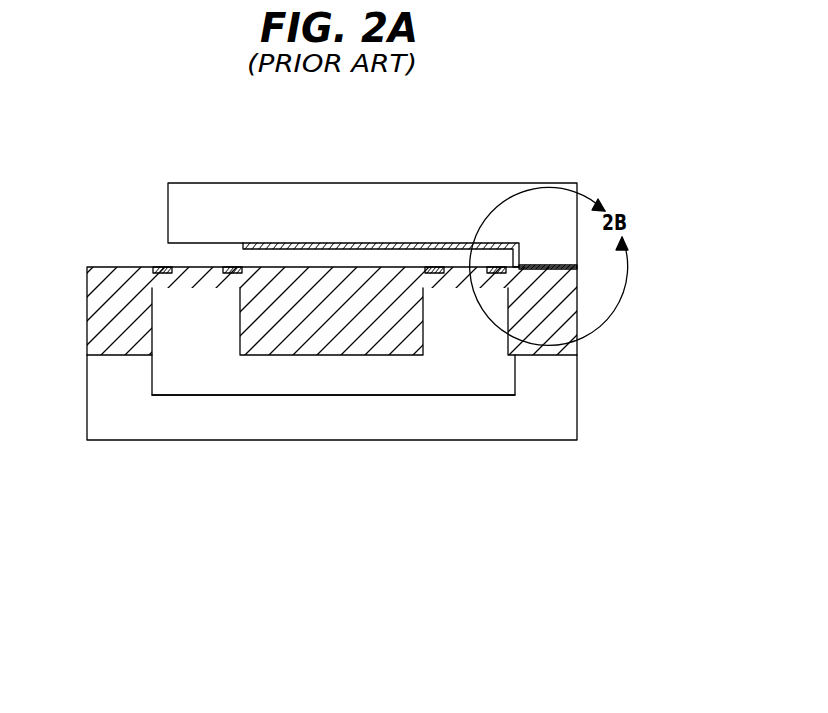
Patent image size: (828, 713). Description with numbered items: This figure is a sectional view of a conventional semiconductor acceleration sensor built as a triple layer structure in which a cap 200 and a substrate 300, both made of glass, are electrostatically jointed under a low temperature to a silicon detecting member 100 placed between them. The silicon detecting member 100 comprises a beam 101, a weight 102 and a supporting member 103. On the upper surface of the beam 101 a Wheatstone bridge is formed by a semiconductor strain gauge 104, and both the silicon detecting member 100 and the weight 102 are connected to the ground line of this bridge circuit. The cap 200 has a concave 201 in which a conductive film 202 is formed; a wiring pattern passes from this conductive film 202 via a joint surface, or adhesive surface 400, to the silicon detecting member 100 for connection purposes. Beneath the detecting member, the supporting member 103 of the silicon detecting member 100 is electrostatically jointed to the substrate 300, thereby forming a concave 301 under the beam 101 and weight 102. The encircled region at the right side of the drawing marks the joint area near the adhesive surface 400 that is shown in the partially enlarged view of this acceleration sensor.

The silicon detecting member 100 is at (677, 268).
The beam 101 is at (198, 272).
The weight 102 is at (358, 300).
The supporting member 103 is at (565, 316).
The semiconductor strain gauge 104 is at (161, 267).
The cap 200 is at (558, 220).
The concave 201 is at (240, 243).
The conductive film 202 is at (307, 243).
The substrate 300 is at (550, 375).
The concave 301 is at (176, 393).
The adhesive surface 400 is at (577, 270).